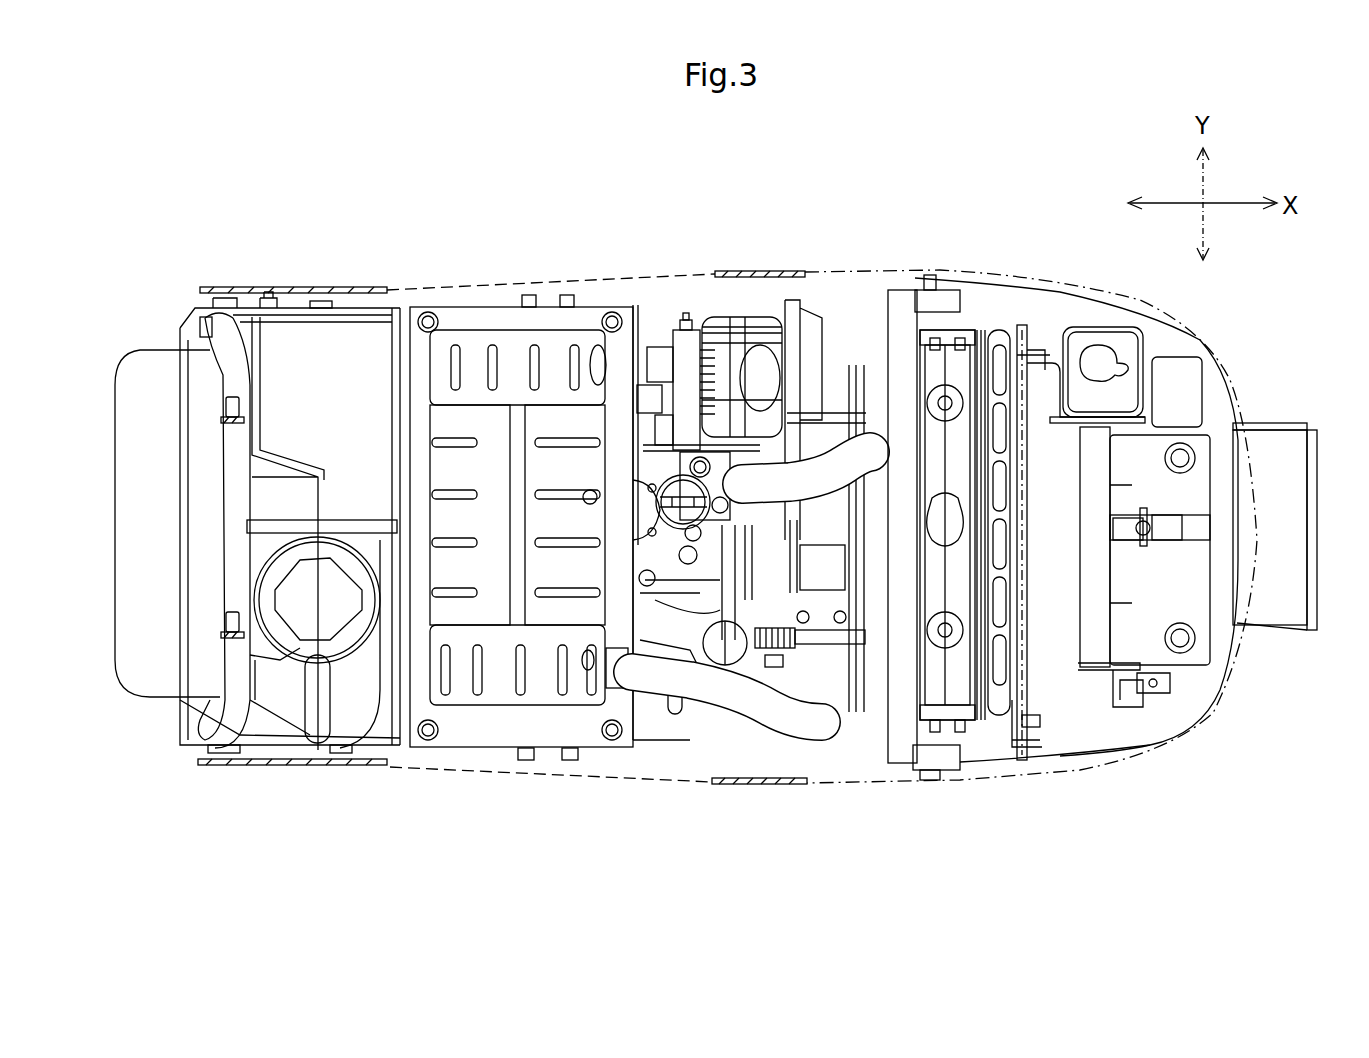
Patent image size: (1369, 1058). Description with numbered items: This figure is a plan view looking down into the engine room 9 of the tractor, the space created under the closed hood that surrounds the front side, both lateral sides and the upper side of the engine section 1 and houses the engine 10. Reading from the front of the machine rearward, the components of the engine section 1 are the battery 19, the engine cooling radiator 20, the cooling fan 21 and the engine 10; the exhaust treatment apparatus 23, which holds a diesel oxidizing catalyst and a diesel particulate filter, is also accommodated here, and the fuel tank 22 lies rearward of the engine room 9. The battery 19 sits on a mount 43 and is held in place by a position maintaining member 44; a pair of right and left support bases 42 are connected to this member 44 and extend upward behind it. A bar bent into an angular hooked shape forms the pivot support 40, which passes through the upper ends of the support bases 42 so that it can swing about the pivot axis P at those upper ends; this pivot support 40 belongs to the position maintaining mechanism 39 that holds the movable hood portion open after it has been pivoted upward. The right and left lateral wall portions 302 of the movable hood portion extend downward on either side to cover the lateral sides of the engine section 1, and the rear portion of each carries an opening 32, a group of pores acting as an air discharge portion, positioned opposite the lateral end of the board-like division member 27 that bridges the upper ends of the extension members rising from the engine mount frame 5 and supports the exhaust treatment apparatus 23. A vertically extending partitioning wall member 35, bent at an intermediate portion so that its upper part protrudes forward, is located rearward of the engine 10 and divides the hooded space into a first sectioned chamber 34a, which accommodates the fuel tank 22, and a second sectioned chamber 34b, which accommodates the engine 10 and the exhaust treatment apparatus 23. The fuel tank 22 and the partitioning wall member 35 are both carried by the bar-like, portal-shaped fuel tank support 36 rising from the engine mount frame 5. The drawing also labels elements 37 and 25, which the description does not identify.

The engine section 1 is at (851, 272).
The lateral wall portions 302 is at (766, 271).
The opening 32 is at (586, 276).
The fuel tank 22 is at (150, 382).
The fuel tank support 36 is at (228, 522).
The clamp 37 is at (232, 407).
The partitioning wall member 35 is at (392, 366).
The first sectioned chamber 34a is at (347, 700).
The second sectioned chamber 34b is at (455, 760).
The division member 27 is at (478, 732).
The exhaust treatment apparatus 23 is at (510, 340).
The engine 10 is at (705, 330).
The engine room 9 is at (680, 746).
The hose 25 is at (748, 702).
The cooling fan 21 is at (858, 396).
The engine cooling radiator 20 is at (926, 672).
The pivot support 40 is at (1026, 521).
The support bases 42 is at (1021, 328).
The position maintaining mechanism 39 is at (1043, 746).
The position maintaining member 44 is at (1097, 655).
The battery 19 is at (1190, 493).
The engine mount frame 5 is at (1262, 424).
The mount 43 is at (1152, 738).
The pivot axis P is at (1030, 622).